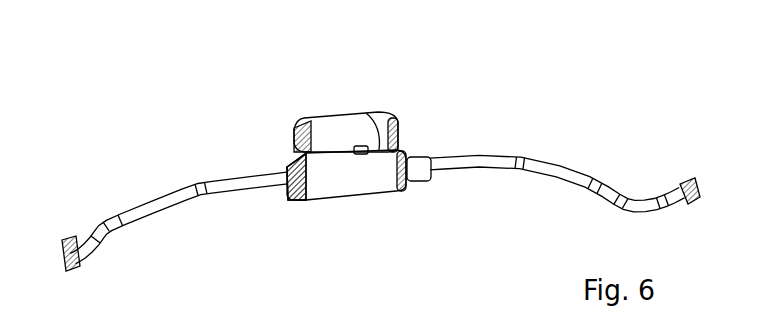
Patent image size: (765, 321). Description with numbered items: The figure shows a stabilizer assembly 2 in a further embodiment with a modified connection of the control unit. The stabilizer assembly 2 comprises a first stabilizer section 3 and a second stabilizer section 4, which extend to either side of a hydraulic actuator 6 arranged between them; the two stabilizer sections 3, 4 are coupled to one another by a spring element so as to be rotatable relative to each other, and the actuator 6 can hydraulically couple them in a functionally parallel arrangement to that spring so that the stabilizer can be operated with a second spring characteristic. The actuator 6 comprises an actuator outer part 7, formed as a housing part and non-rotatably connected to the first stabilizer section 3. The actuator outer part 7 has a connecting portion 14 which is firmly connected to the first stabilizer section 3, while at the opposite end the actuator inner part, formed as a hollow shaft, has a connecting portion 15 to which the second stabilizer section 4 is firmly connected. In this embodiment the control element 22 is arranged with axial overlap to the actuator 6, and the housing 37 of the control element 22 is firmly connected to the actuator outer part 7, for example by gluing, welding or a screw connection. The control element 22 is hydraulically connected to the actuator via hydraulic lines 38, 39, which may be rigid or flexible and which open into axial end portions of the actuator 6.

The stabilizer assembly 2 is at (136, 128).
The first stabilizer section 3 is at (538, 156).
The second stabilizer section 4 is at (181, 183).
The hydraulic actuator 6 is at (351, 194).
The actuator outer part 7 is at (373, 188).
The connecting portion 14 is at (423, 180).
The connecting portion 15 is at (292, 197).
The control element 22 is at (338, 117).
The housing 37 is at (363, 128).
The hydraulic line 38 is at (405, 137).
The hydraulic line 39 is at (292, 143).